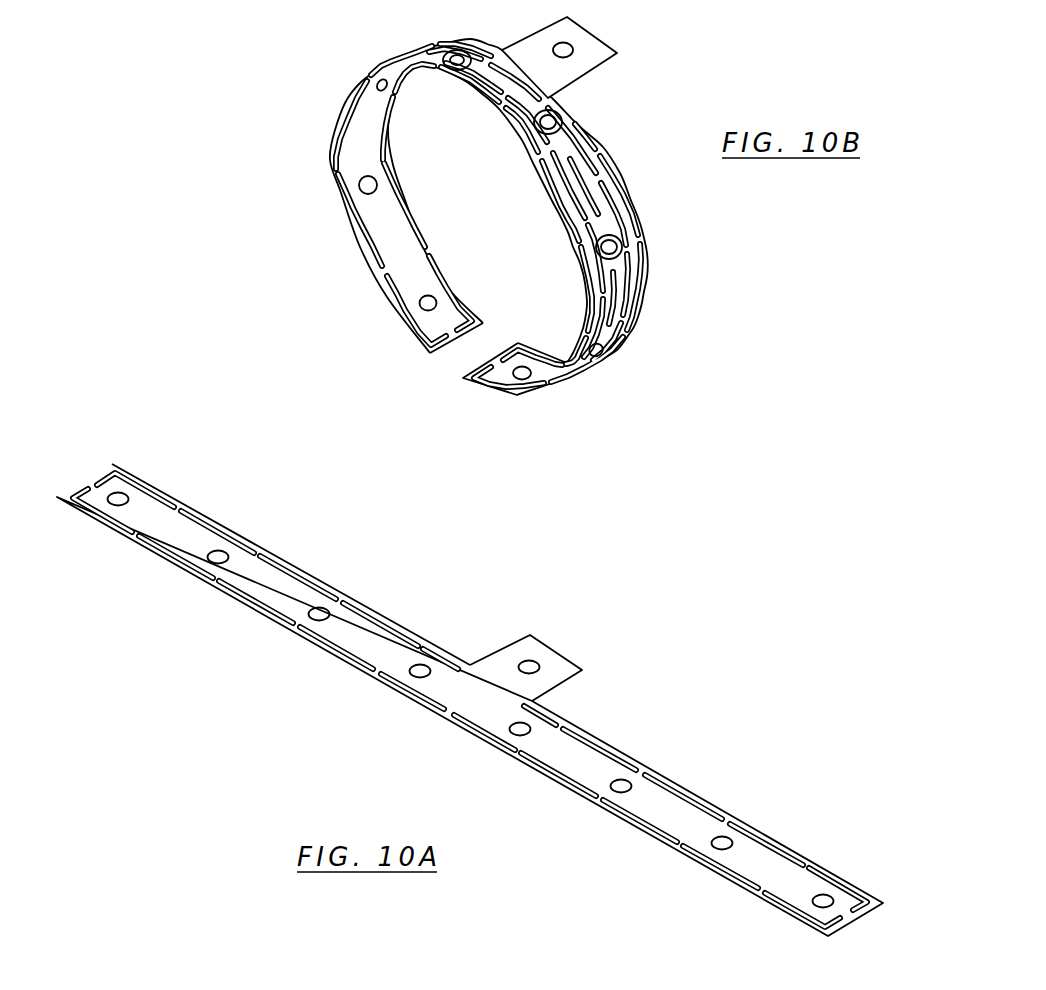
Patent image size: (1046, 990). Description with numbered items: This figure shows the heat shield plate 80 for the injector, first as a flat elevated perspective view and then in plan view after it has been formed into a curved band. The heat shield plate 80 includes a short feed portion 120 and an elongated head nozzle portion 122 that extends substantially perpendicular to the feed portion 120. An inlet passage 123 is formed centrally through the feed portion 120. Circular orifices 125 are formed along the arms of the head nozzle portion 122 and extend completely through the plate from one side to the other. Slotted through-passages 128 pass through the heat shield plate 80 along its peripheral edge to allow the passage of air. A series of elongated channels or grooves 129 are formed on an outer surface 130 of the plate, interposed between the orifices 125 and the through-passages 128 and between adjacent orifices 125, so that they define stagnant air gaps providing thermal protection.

In FIG. 10A, the heat shield plate 80 is at (470, 700).
In FIG. 10B, the heat shield plate 80 is at (515, 217).
In FIG. 10A, the feed portion 120 is at (562, 665).
In FIG. 10B, the feed portion 120 is at (603, 53).
In FIG. 10A, the head nozzle portion 122 is at (663, 803).
In FIG. 10B, the head nozzle portion 122 is at (625, 330).
In FIG. 10A, the inlet passage 123 is at (533, 661).
In FIG. 10B, the inlet passage 123 is at (568, 42).
In FIG. 10A, the circular orifices 125 is at (306, 613).
In FIG. 10B, the circular orifices 125 is at (424, 298).
In FIG. 10A, the slotted through-passages 128 is at (160, 560).
In FIG. 10B, the slotted through-passages 128 is at (620, 188).
In FIG. 10B, the elongated channels or grooves 129 is at (628, 290).
In FIG. 10B, the outer surface 130 is at (560, 97).